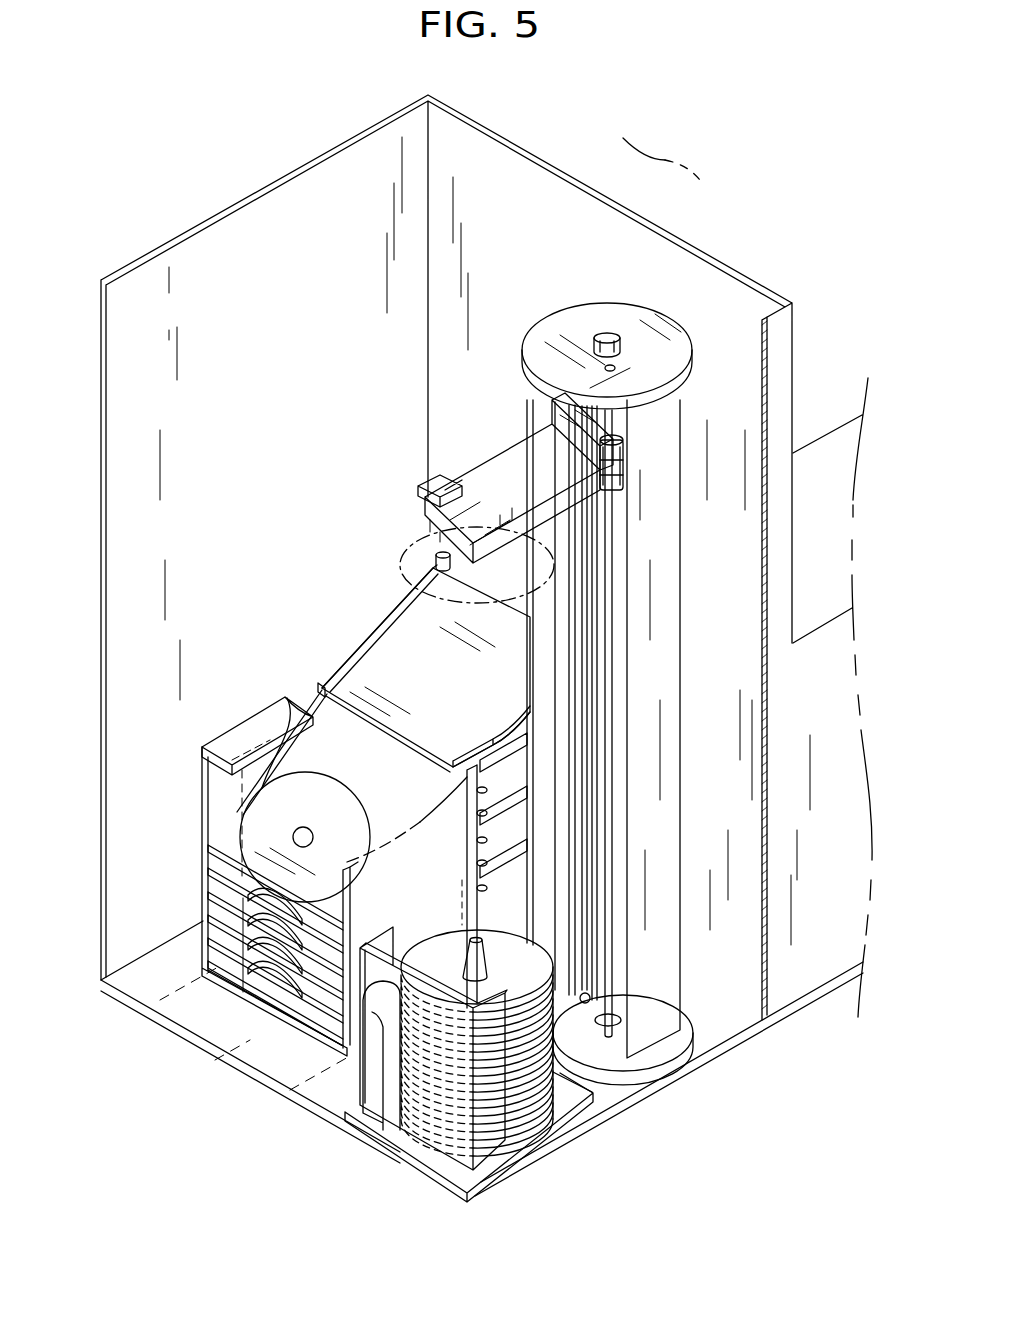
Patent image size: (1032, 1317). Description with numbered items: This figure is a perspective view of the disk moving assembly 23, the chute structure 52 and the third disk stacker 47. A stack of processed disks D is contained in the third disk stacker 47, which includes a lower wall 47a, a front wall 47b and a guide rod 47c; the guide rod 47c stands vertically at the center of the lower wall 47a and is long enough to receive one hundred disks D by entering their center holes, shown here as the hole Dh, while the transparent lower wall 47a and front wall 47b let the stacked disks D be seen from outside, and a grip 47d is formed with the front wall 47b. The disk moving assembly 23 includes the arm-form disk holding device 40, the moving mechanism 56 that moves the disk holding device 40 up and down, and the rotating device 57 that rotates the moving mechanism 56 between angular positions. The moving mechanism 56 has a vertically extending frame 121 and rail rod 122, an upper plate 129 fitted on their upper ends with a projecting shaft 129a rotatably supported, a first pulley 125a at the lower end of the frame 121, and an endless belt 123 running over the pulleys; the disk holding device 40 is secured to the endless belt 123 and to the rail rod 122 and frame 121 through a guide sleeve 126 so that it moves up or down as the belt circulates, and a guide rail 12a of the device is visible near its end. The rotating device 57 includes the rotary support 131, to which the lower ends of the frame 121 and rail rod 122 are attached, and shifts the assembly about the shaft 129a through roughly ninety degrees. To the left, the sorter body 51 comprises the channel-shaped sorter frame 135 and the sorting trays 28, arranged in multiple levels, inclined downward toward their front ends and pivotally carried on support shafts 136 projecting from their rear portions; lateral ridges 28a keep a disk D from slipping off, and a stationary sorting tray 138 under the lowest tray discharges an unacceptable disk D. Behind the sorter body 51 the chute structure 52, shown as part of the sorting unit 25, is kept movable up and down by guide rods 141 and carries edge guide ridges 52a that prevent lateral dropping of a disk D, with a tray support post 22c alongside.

The guide rail 12a is at (445, 490).
The tray support post 22c is at (465, 870).
The disk moving assembly 23 is at (631, 675).
The disc storage unit 25 is at (334, 810).
The sorting trays 28 is at (273, 723).
The lateral ridges 28a is at (207, 838).
The disk holding device 40 is at (483, 467).
The third disk stacker 47 is at (486, 1076).
The lower wall 47a is at (572, 1100).
The front wall 47b is at (447, 1145).
The guide rod 47c is at (487, 967).
The grip 47d is at (373, 1115).
The sorter body 51 is at (303, 848).
The chute structure 52 is at (413, 668).
The edge guide ridges 52a is at (337, 662).
The moving mechanism 56 is at (666, 665).
The rotating device 57 is at (711, 1035).
The frame 121 is at (670, 640).
The rail rod 122 is at (610, 540).
The endless belt 123 is at (598, 780).
The first pulley 125a is at (583, 998).
The guide sleeve 126 is at (615, 462).
The upper plate 129 is at (668, 330).
The shaft 129a is at (609, 331).
The rotary support 131 is at (652, 1053).
The sorter frame 135 is at (217, 748).
The support shafts 136 is at (478, 887).
The stationary sorting tray 138 is at (248, 990).
The guide rods 141 is at (438, 553).
The disk D is at (400, 556).
The disc center hole Dh is at (305, 827).